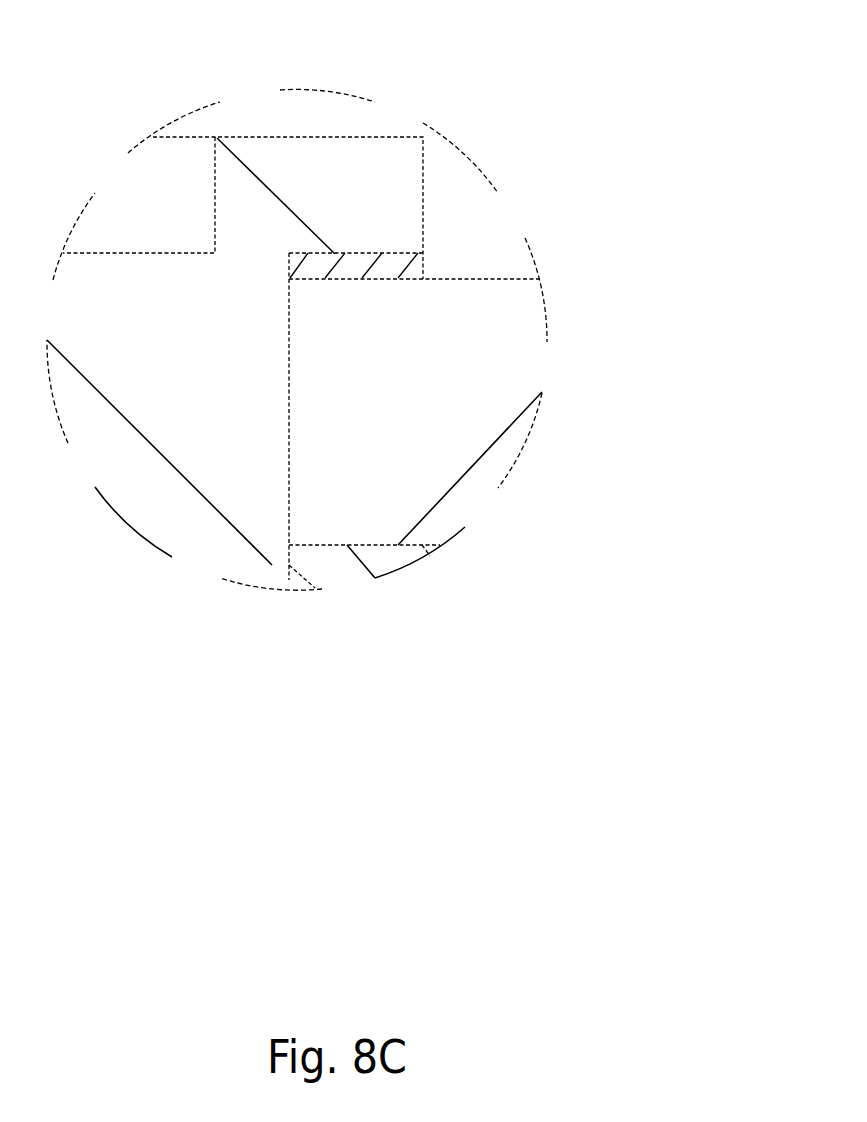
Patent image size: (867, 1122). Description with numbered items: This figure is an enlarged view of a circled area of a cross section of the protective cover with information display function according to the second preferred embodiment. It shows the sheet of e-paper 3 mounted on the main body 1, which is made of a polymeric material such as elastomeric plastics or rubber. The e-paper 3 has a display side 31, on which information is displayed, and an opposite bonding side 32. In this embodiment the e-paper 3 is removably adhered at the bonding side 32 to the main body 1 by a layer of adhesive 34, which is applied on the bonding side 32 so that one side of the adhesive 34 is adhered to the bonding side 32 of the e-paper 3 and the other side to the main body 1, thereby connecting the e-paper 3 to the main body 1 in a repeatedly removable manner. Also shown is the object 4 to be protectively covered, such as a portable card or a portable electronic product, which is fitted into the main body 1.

The main body 1 is at (475, 390).
The e-paper 3 is at (370, 160).
The display side 31 is at (134, 147).
The bonding side 32 is at (525, 335).
The adhesive 34 is at (412, 272).
The object 4 is at (330, 565).